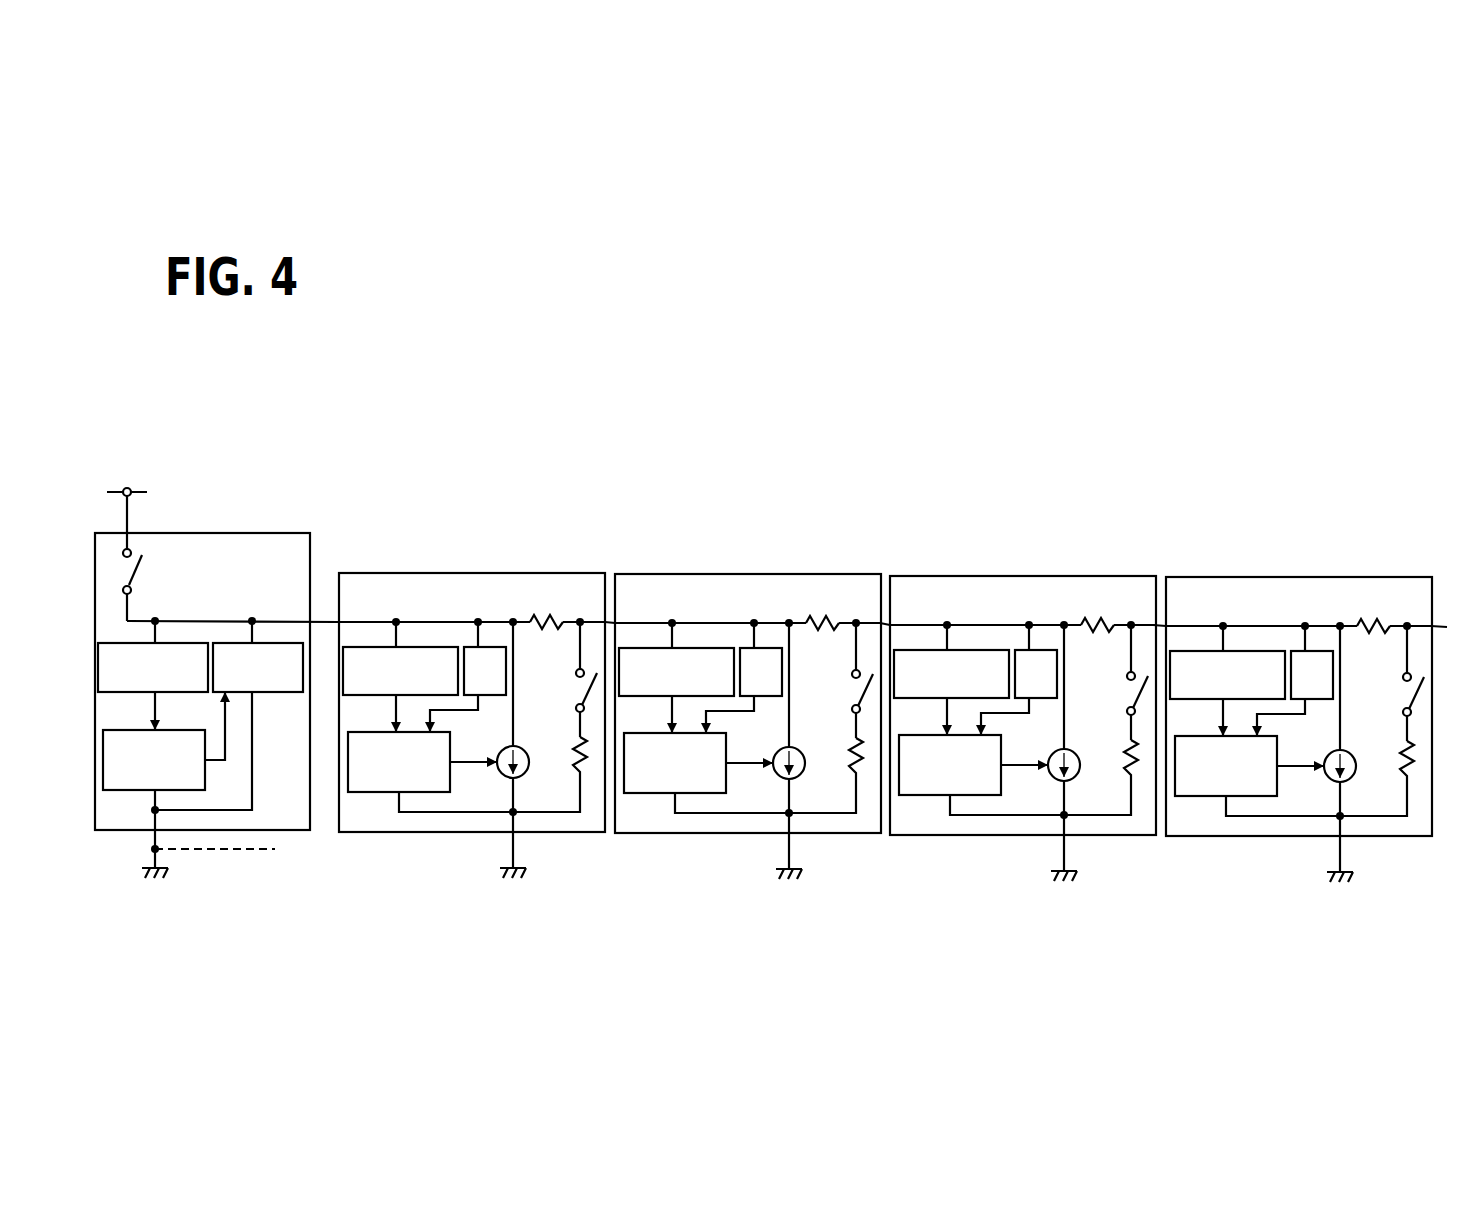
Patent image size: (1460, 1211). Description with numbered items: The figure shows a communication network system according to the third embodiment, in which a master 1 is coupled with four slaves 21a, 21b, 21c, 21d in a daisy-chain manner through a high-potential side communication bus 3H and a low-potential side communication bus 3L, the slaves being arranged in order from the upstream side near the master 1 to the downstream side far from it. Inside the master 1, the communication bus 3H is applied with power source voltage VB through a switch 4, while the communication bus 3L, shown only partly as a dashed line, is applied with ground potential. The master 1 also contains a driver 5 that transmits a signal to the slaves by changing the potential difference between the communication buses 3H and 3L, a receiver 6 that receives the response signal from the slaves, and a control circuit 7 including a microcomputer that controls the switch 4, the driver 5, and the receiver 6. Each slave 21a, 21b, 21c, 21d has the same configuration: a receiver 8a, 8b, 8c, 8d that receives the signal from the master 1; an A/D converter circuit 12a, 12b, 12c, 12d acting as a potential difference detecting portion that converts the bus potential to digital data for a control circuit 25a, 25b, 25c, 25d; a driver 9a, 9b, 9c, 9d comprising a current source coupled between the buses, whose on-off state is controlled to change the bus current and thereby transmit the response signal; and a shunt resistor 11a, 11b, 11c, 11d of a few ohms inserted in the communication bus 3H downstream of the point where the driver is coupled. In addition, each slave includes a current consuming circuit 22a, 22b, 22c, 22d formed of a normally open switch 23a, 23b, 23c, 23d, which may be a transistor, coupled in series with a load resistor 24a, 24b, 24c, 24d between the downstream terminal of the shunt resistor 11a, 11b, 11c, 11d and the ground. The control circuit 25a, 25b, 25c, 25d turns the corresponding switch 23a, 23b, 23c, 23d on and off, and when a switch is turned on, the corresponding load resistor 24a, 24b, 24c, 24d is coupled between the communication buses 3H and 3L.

The master 1 is at (277, 533).
The communication bus 3H is at (320, 621).
The communication bus 3L is at (220, 850).
The switch 4 is at (140, 573).
The driver 5 is at (277, 695).
The receiver 6 is at (130, 695).
The control circuit 7 is at (130, 793).
The slave 21a is at (474, 573).
The slave 21b is at (748, 697).
The slave 21c is at (1023, 699).
The slave 21d is at (1299, 700).
The receiver 8a is at (382, 695).
The receiver 8b is at (676, 678).
The receiver 8c is at (951, 680).
The receiver 8d is at (1227, 681).
The A/D converter circuit 12a is at (490, 695).
The A/D converter circuit 12b is at (745, 686).
The A/D converter circuit 12c is at (1019, 688).
The A/D converter circuit 12d is at (1296, 689).
The control circuit 25a is at (450, 778).
The control circuit 25b is at (706, 773).
The control circuit 25c is at (981, 775).
The control circuit 25d is at (1257, 776).
The driver 9a is at (530, 766).
The driver 9b is at (811, 751).
The driver 9c is at (1084, 753).
The driver 9d is at (1362, 754).
The shunt resistor 11a is at (538, 617).
The shunt resistor 11b is at (840, 607).
The shunt resistor 11c is at (1114, 609).
The shunt resistor 11d is at (1391, 610).
The current consuming circuit 22a is at (555, 705).
The current consuming circuit 22b is at (835, 681).
The current consuming circuit 22c is at (1110, 683).
The current consuming circuit 22d is at (1386, 684).
The switch 23a is at (572, 685).
The switch 23b is at (834, 680).
The switch 23c is at (1109, 682).
The switch 23d is at (1385, 683).
The load resistor 24a is at (563, 754).
The load resistor 24b is at (826, 762).
The load resistor 24c is at (1101, 764).
The load resistor 24d is at (1377, 765).